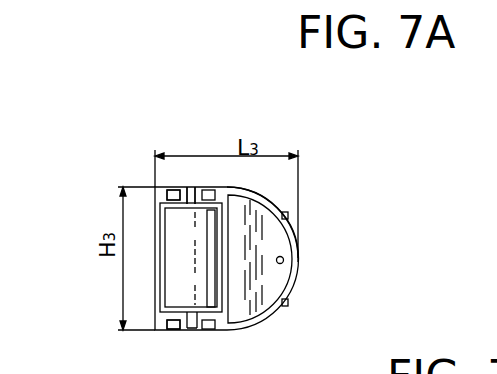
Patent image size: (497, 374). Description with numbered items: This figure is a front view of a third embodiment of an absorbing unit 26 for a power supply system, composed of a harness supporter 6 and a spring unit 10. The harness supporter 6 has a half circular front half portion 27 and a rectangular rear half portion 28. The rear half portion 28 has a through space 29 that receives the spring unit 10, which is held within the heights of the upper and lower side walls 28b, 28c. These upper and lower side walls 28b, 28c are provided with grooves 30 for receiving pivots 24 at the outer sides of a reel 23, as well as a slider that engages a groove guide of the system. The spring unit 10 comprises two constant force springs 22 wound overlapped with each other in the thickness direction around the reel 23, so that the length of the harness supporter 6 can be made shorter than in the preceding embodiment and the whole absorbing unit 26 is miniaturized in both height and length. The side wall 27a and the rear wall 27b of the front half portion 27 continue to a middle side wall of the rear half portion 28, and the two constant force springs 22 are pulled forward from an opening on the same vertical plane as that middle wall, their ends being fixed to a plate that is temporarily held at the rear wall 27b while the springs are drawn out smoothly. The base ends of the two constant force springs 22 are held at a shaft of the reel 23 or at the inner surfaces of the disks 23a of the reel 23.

The absorbing unit 26 is at (440, 177).
The front half portion 27 is at (265, 195).
The harness supporter 6 is at (282, 200).
The side wall 27a is at (298, 228).
The rear wall 27b is at (273, 250).
The through space 29 is at (163, 223).
The spring unit 10 is at (160, 263).
The constant force spring 22 is at (168, 280).
The reel 23 is at (168, 308).
The rear half portion 28 is at (157, 187).
The upper side wall 28b is at (176, 189).
The lower side wall 28c is at (172, 330).
The pivot 24 is at (190, 188).
The groove 30 is at (196, 189).
The disk 23a is at (199, 324).